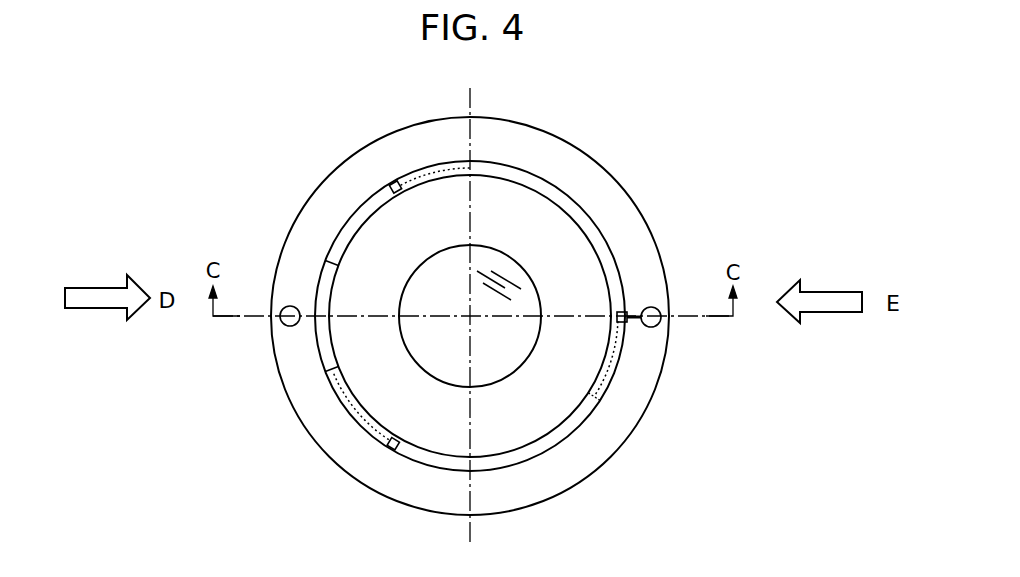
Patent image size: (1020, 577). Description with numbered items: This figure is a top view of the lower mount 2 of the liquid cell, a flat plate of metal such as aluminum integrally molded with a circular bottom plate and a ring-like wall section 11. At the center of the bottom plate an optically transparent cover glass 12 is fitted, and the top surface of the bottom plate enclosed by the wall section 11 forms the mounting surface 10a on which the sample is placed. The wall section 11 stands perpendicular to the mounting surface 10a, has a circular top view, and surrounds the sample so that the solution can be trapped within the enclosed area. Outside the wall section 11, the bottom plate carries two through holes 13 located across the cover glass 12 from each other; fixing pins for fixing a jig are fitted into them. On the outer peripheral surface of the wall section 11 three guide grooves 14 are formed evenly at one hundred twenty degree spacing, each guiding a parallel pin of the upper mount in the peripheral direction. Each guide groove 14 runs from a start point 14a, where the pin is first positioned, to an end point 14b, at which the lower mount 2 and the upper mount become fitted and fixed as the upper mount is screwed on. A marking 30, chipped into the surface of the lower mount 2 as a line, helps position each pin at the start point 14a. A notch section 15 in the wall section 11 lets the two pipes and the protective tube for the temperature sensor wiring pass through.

The lower mount 2 is at (768, 166).
The mounting surface 10a is at (575, 265).
The wall section 11 is at (575, 205).
The cover glass 12 is at (478, 262).
The through hole 13 is at (283, 324).
The guide groove 14 is at (431, 165).
The start point 14a is at (392, 182).
The end point 14b is at (471, 160).
The notch section 15 is at (325, 272).
The marking 30 is at (661, 319).